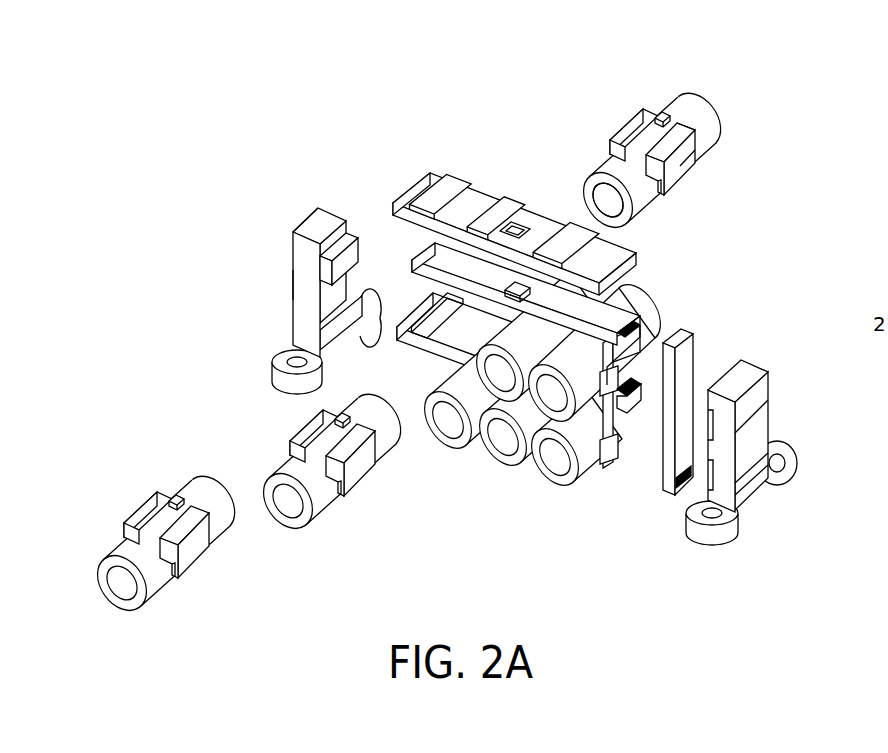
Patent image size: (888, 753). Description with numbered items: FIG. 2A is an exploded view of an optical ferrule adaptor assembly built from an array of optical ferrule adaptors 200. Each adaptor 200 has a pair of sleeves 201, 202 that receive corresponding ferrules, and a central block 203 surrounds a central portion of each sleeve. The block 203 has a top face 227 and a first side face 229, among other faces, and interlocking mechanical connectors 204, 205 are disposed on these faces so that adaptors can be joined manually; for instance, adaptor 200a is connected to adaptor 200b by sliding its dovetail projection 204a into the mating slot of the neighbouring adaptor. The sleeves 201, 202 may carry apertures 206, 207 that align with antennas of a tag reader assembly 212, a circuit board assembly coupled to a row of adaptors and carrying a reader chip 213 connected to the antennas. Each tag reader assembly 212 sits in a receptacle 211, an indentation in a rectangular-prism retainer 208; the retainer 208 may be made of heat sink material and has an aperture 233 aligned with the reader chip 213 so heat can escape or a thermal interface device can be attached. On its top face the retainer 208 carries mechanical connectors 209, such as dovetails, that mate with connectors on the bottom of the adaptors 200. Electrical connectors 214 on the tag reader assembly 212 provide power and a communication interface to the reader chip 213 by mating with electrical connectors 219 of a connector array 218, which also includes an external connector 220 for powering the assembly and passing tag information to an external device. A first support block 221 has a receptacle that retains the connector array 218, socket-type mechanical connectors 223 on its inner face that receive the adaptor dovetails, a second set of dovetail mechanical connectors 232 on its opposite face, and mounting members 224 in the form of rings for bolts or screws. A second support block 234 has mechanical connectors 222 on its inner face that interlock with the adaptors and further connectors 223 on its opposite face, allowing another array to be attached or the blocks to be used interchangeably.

The optical ferrule adaptor 200 is at (448, 335).
The adaptor 200a is at (347, 464).
The adaptor 200b is at (524, 301).
The sleeve 201 is at (690, 159).
The sleeve 202 is at (649, 223).
The central block 203 is at (708, 180).
The mechanical connector 204 is at (724, 155).
The mechanical connector 204a is at (390, 460).
The mechanical connector 205 is at (620, 127).
The aperture 206 is at (346, 403).
The aperture 207 is at (289, 436).
The retainer 208 is at (478, 337).
The mechanical connector 209 is at (458, 185).
The receptacle 211 is at (543, 217).
The tag reader assembly 212 is at (500, 282).
The reader chip 213 is at (518, 287).
The electrical connector 214 is at (638, 326).
The connector array 218 is at (768, 439).
The electrical connector 219 is at (707, 422).
The external connector 220 is at (675, 490).
The first support block 221 is at (765, 435).
The mechanical connector 222 is at (352, 257).
The mechanical connector 223 is at (533, 358).
The mounting member 224 is at (276, 360).
The top face 227 is at (659, 90).
The first side face 229 is at (712, 179).
The mechanical connector 232 is at (765, 392).
The aperture 233 is at (512, 220).
The second support block 234 is at (307, 225).